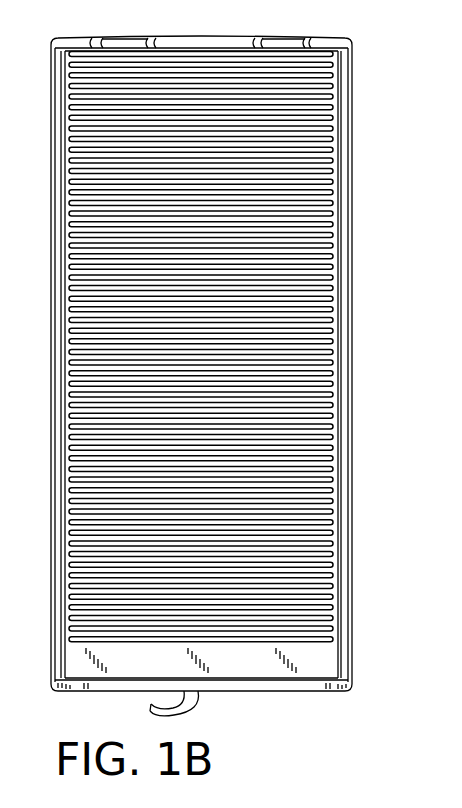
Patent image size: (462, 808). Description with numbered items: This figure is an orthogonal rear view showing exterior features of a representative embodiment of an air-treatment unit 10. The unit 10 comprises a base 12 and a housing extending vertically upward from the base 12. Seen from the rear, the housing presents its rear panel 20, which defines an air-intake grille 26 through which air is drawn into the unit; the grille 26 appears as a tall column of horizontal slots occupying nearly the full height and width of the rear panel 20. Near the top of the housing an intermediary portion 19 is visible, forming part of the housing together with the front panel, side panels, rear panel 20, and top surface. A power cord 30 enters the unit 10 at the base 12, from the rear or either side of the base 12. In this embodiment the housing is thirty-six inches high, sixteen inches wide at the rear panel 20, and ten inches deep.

The air-treatment unit 10 is at (284, 22).
The base 12 is at (140, 683).
The intermediary portion 19 is at (118, 9).
The rear panel 20 is at (55, 253).
The air-intake grille 26 is at (95, 288).
The power cord 30 is at (190, 690).